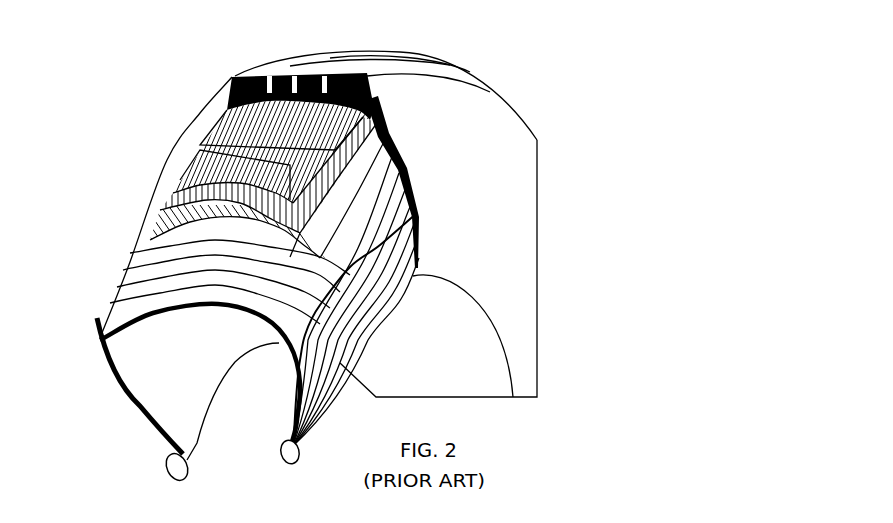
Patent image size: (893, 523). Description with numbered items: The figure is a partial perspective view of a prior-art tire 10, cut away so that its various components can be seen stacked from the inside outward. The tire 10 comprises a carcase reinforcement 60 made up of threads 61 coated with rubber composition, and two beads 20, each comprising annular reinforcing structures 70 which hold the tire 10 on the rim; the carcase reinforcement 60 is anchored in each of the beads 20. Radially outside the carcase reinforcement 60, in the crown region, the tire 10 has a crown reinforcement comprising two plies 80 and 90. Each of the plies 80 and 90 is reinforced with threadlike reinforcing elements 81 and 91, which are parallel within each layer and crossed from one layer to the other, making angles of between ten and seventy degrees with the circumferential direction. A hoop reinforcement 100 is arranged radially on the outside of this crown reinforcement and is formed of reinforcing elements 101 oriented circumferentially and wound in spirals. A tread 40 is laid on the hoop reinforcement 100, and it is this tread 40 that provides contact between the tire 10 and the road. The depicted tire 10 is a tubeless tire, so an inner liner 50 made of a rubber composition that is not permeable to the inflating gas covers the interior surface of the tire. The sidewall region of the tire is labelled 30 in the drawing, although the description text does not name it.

The tire 10 is at (503, 50).
The beads 20 is at (273, 420).
The sidewall portion 30 is at (440, 207).
The tread 40 is at (262, 74).
The inner liner 50 is at (180, 359).
The carcase reinforcement 60 is at (70, 273).
The threads 61 is at (130, 257).
The annular reinforcing structures 70 is at (280, 447).
The ply 80 is at (93, 220).
The threadlike reinforcing elements 81 is at (160, 203).
The ply 90 is at (108, 140).
The threadlike reinforcing elements 91 is at (187, 157).
The hoop reinforcement 100 is at (131, 73).
The reinforcing elements 101 is at (223, 118).